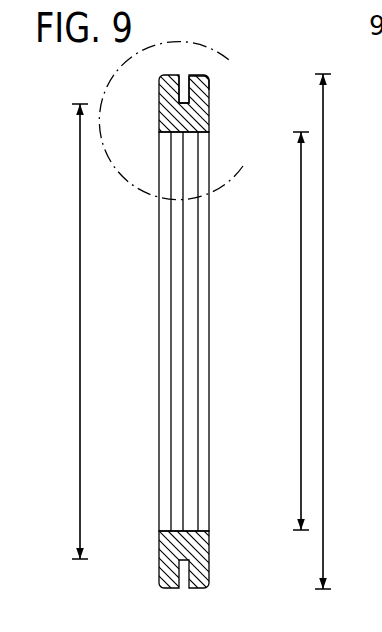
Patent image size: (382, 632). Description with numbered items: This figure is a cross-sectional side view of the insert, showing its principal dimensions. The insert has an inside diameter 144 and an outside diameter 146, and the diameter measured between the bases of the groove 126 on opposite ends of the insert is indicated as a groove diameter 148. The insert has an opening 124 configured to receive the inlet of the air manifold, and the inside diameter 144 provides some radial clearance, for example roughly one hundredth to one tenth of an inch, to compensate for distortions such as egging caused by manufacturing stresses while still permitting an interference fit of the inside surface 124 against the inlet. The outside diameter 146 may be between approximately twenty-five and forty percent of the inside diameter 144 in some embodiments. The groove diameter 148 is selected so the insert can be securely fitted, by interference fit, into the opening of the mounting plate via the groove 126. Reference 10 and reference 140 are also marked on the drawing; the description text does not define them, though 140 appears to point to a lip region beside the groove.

The seal assembly 10 is at (229, 60).
The opening 124 is at (174, 520).
The groove 126 is at (176, 66).
The lip 140 is at (193, 75).
The inside diameter 144 is at (301, 330).
The outside diameter 146 is at (323, 330).
The groove diameter 148 is at (80, 332).